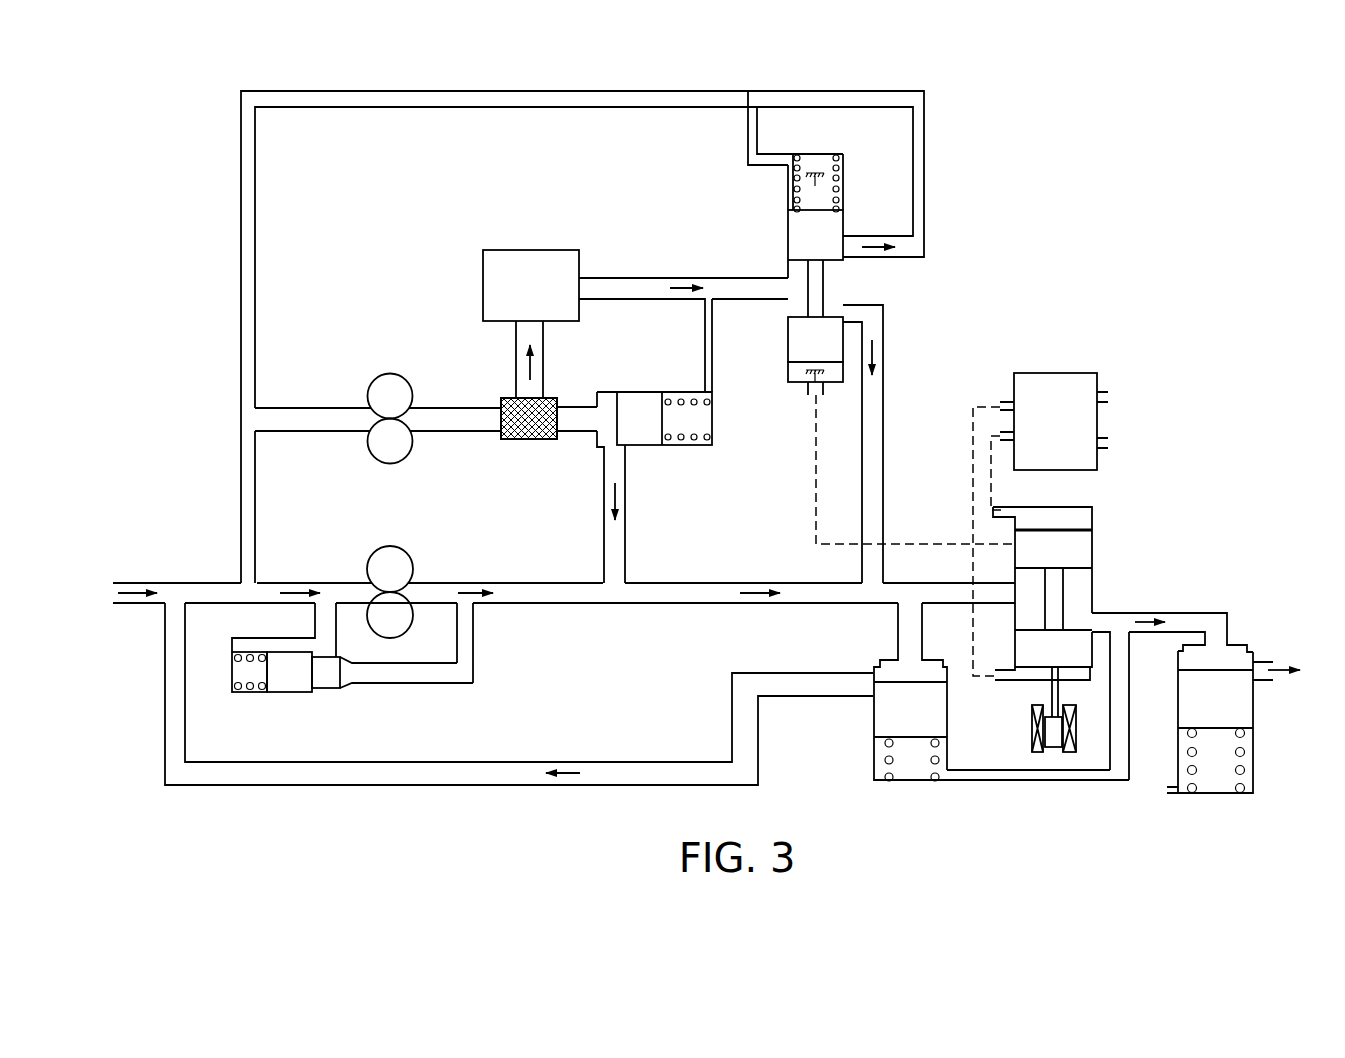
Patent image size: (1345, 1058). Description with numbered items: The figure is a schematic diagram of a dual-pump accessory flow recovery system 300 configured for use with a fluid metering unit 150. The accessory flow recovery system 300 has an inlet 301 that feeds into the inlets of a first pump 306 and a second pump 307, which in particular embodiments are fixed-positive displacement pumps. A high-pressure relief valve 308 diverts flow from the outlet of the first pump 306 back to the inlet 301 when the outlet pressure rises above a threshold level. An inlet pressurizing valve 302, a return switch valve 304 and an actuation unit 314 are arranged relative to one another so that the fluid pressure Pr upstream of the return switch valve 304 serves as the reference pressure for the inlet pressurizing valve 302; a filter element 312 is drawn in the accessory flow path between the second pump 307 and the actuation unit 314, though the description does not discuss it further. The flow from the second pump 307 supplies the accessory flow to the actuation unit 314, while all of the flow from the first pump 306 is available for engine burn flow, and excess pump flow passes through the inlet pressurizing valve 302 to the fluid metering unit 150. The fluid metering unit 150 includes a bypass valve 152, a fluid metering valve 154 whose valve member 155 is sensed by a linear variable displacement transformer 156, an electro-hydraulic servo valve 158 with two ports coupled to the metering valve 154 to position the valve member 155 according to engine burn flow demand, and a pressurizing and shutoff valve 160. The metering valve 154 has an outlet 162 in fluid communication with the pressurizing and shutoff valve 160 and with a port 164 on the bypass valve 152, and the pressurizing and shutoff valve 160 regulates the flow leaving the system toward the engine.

The dual-pump accessory flow recovery system 300 is at (1033, 251).
The inlet 301 is at (111, 589).
The inlet pressurizing valve 302 is at (686, 447).
The return switch valve 304 is at (843, 287).
The first pump 306 is at (374, 553).
The second pump 307 is at (394, 374).
The high-pressure relief valve 308 is at (326, 693).
The fuel filter 312 is at (537, 440).
The actuation unit 314 is at (537, 250).
The fluid metering unit 150 is at (1223, 465).
The bypass valve 152 is at (873, 761).
The fluid metering valve 154 is at (1092, 588).
The valve member 155 is at (1092, 543).
The linear variable displacement transformer (LVDT) 156 is at (1031, 722).
The electro-hydraulic servo valve (EHSV) 158 is at (1061, 373).
The pressurizing and shutoff valve 160 is at (1254, 776).
The outlet 162 is at (1129, 614).
The port 164 is at (958, 781).